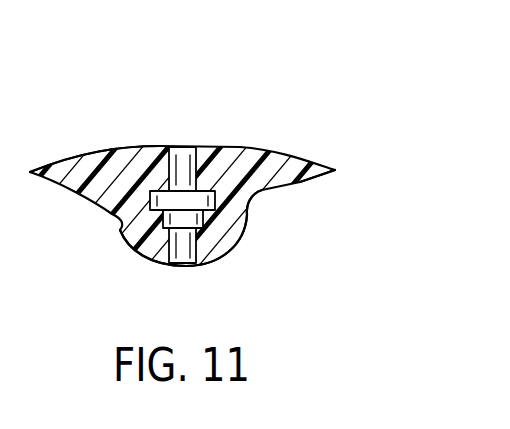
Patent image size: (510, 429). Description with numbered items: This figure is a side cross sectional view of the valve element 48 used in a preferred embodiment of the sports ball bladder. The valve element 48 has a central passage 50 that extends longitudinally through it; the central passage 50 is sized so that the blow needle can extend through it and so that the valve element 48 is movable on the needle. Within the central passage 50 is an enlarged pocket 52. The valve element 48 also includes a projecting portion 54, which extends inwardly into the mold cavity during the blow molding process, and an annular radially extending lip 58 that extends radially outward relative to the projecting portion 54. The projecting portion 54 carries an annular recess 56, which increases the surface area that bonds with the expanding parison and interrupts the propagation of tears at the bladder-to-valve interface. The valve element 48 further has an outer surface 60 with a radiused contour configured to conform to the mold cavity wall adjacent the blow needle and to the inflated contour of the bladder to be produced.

The valve element 48 is at (262, 147).
The central passage 50 is at (177, 259).
The enlarged pocket 52 is at (206, 196).
The projecting portion 54 is at (215, 257).
The annular recess 56 is at (240, 214).
The annular radially extending lip 58 is at (334, 171).
The outer surface 60 is at (102, 150).